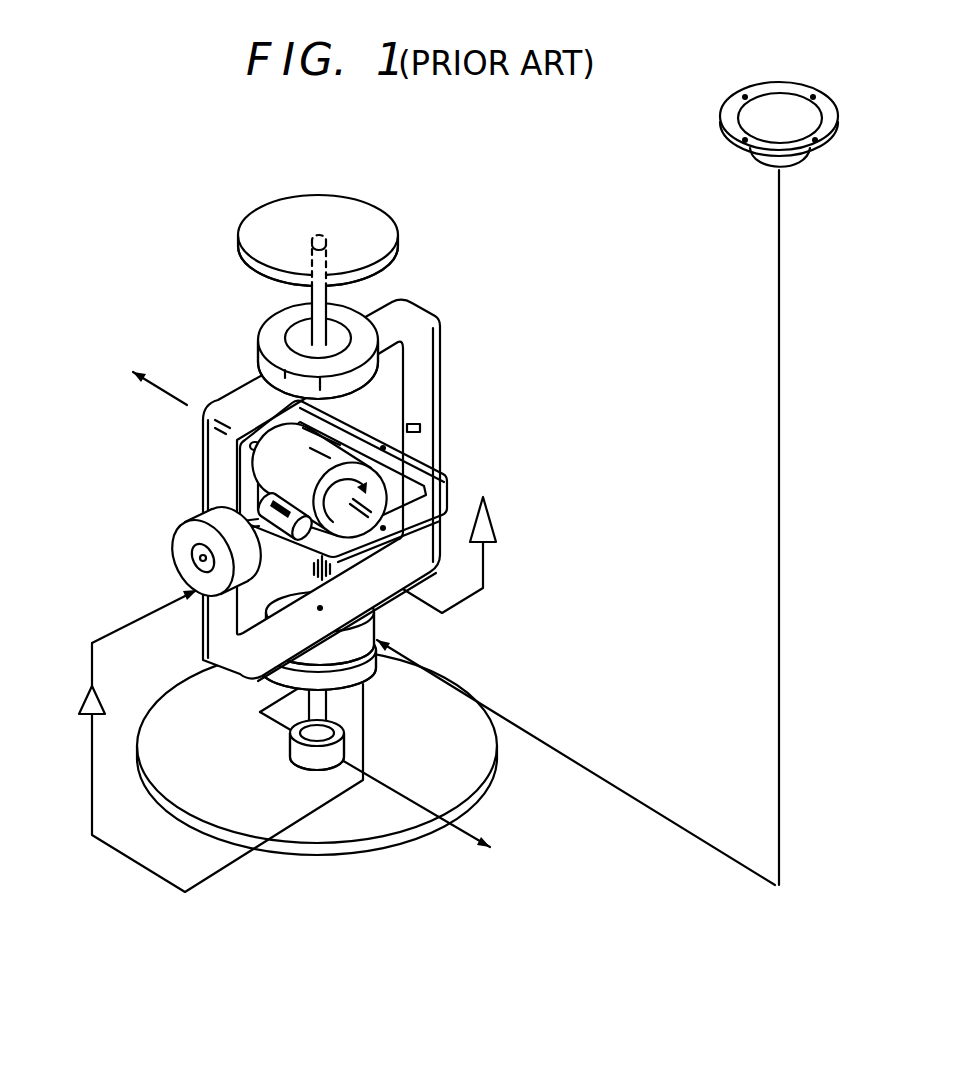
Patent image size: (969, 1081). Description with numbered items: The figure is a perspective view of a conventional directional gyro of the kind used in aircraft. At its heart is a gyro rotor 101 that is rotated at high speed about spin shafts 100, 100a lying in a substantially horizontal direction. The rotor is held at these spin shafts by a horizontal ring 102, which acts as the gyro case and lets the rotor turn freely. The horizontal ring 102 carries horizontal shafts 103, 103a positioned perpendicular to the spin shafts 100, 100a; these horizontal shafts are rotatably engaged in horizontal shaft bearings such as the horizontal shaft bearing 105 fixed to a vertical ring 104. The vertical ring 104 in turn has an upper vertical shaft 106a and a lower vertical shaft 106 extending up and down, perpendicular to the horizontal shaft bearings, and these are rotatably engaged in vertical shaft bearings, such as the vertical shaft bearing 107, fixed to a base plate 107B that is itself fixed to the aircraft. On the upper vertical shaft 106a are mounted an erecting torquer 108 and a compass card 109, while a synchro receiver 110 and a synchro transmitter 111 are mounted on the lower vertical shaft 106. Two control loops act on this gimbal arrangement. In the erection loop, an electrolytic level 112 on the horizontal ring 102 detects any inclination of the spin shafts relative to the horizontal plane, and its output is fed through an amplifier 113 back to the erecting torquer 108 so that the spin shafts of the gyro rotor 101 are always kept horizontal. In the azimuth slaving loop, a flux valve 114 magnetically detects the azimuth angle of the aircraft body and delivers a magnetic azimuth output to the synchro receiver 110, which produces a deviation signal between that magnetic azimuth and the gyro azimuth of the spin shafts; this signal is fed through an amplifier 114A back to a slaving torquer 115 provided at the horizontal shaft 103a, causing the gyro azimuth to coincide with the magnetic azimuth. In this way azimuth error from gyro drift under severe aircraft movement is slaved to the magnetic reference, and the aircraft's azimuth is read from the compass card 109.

The spin shaft 100 is at (387, 492).
The spin shaft 100a is at (257, 447).
The gyro rotor 101 is at (395, 478).
The horizontal ring 102 is at (378, 378).
The horizontal shaft 103 is at (412, 425).
The horizontal shaft 103a is at (240, 522).
The vertical ring 104 is at (412, 316).
The horizontal shaft bearing 105 is at (390, 447).
The vertical shaft 106 is at (318, 707).
The vertical shaft 106a is at (316, 300).
The vertical shaft bearing 107 is at (308, 760).
The base plate 107B is at (372, 832).
The erecting torquer 108 is at (270, 333).
The compass card 109 is at (355, 212).
The synchro receiver 110 is at (373, 613).
The synchro transmitter 111 is at (338, 653).
The electrolytic level 112 is at (240, 484).
The amplifier 113 is at (496, 528).
The flux valve 114 is at (722, 113).
The amplifier 114A is at (104, 712).
The slaving torquer 115 is at (187, 545).